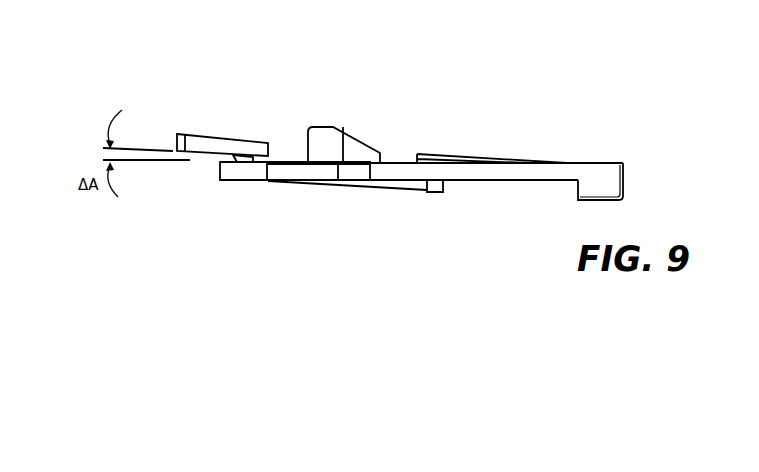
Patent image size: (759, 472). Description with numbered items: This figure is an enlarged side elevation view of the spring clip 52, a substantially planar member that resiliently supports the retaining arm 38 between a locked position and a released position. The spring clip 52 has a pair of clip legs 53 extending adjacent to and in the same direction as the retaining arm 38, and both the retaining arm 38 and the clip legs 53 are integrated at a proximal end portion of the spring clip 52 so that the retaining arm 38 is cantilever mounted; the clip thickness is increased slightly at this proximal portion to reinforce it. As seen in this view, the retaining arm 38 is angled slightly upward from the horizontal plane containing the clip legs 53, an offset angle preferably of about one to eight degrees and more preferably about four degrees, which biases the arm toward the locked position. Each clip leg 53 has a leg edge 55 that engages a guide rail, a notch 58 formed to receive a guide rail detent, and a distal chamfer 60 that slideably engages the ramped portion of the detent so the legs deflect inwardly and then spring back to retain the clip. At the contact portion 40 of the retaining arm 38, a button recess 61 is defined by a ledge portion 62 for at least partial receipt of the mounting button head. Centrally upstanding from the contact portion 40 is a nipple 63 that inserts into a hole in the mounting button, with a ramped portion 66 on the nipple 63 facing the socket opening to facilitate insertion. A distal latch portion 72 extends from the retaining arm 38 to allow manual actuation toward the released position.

The spring clip 52 is at (591, 140).
The retaining arm 38 is at (235, 132).
The distal latch portion 72 is at (195, 131).
The contact portion 40 is at (287, 138).
The ledge portion 62 is at (272, 140).
The ramped portion 66 is at (360, 140).
The nipple 63 is at (311, 125).
The distal chamfer 60 is at (247, 182).
The notch 58 is at (360, 183).
The button recess 61 is at (395, 161).
The leg edge 55 is at (477, 170).
The clip leg 53 is at (537, 182).